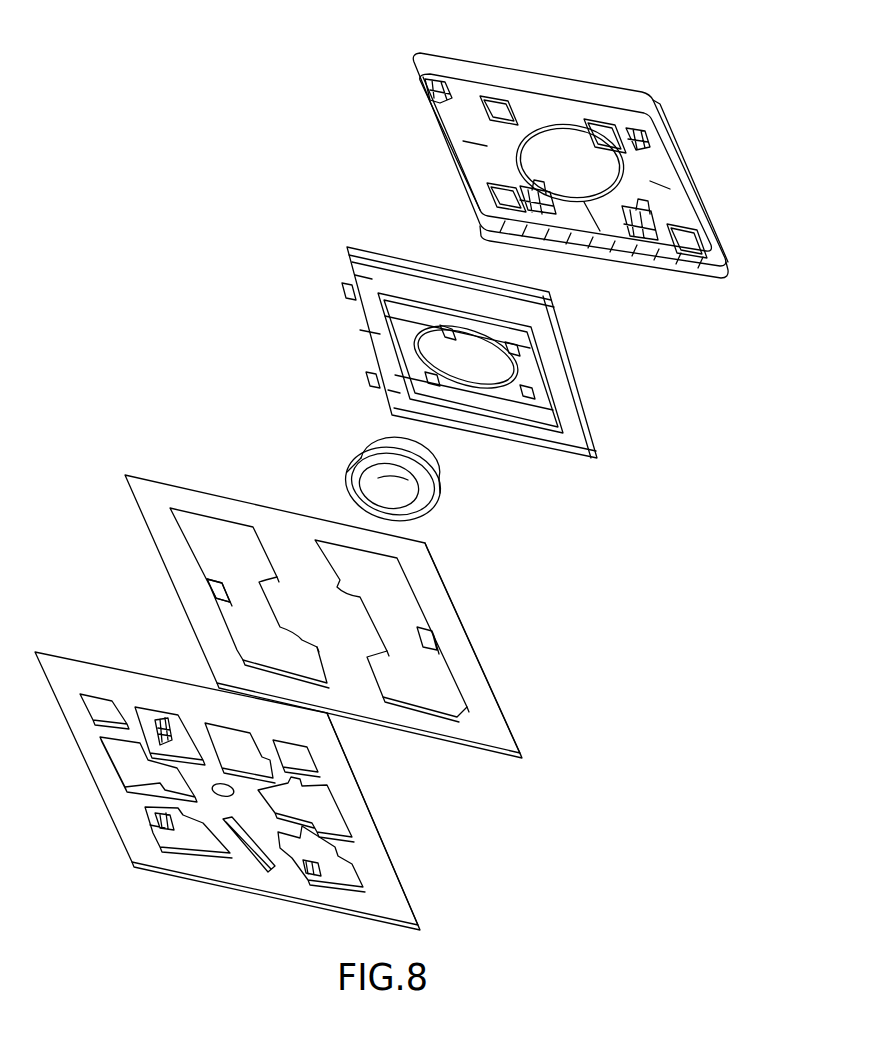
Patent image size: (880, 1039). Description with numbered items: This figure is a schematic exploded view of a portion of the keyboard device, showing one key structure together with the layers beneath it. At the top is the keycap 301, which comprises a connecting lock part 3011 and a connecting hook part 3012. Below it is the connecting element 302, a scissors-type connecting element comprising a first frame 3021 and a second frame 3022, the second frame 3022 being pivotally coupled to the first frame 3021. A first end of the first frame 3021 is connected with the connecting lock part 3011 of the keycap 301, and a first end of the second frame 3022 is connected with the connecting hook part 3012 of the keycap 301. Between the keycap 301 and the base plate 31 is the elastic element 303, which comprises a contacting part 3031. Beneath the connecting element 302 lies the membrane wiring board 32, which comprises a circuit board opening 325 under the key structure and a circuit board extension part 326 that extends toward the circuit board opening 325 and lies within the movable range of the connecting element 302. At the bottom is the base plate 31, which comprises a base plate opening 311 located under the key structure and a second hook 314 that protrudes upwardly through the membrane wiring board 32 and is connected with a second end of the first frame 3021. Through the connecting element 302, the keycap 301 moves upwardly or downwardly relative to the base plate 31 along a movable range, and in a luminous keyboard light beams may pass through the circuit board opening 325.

The keycap 301 is at (549, 165).
The connecting lock part 3011 is at (528, 217).
The connecting hook part 3012 is at (424, 101).
The connecting element 302 is at (466, 336).
The first frame 3021 is at (557, 362).
The second frame 3022 is at (437, 312).
The elastic element 303 is at (369, 465).
The contacting part 3031 is at (393, 478).
The membrane wiring board 32 is at (321, 616).
The circuit board opening 325 is at (210, 538).
The circuit board extension part 326 is at (212, 593).
The base plate 31 is at (237, 791).
The base plate opening 311 is at (130, 762).
The second hook 314 is at (155, 722).